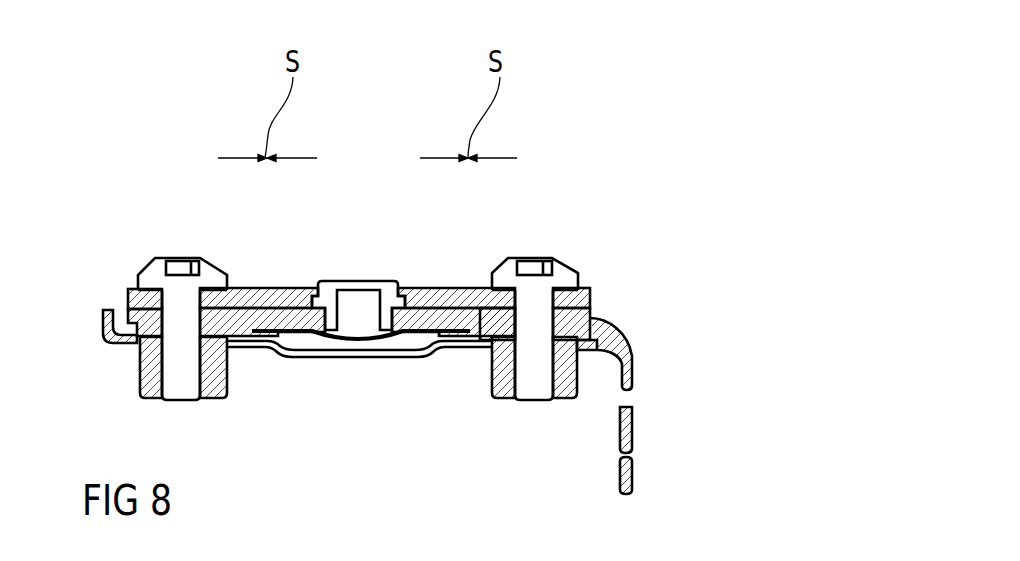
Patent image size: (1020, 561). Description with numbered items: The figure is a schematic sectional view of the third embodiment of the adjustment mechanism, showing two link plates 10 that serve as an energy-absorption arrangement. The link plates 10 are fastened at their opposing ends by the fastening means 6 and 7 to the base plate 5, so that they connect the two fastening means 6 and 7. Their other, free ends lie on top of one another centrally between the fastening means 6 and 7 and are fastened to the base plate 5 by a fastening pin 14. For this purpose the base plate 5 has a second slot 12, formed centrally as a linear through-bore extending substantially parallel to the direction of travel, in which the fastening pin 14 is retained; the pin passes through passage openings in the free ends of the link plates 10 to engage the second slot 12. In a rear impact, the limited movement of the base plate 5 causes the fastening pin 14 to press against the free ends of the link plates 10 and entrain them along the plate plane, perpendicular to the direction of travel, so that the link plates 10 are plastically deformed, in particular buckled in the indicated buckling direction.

The base plate 5 is at (592, 322).
The fastening means 6 is at (153, 263).
The fastening means 7 is at (566, 275).
The link plate 10 is at (262, 296).
The second slot 12 is at (383, 336).
The fastening pin 14 is at (360, 300).